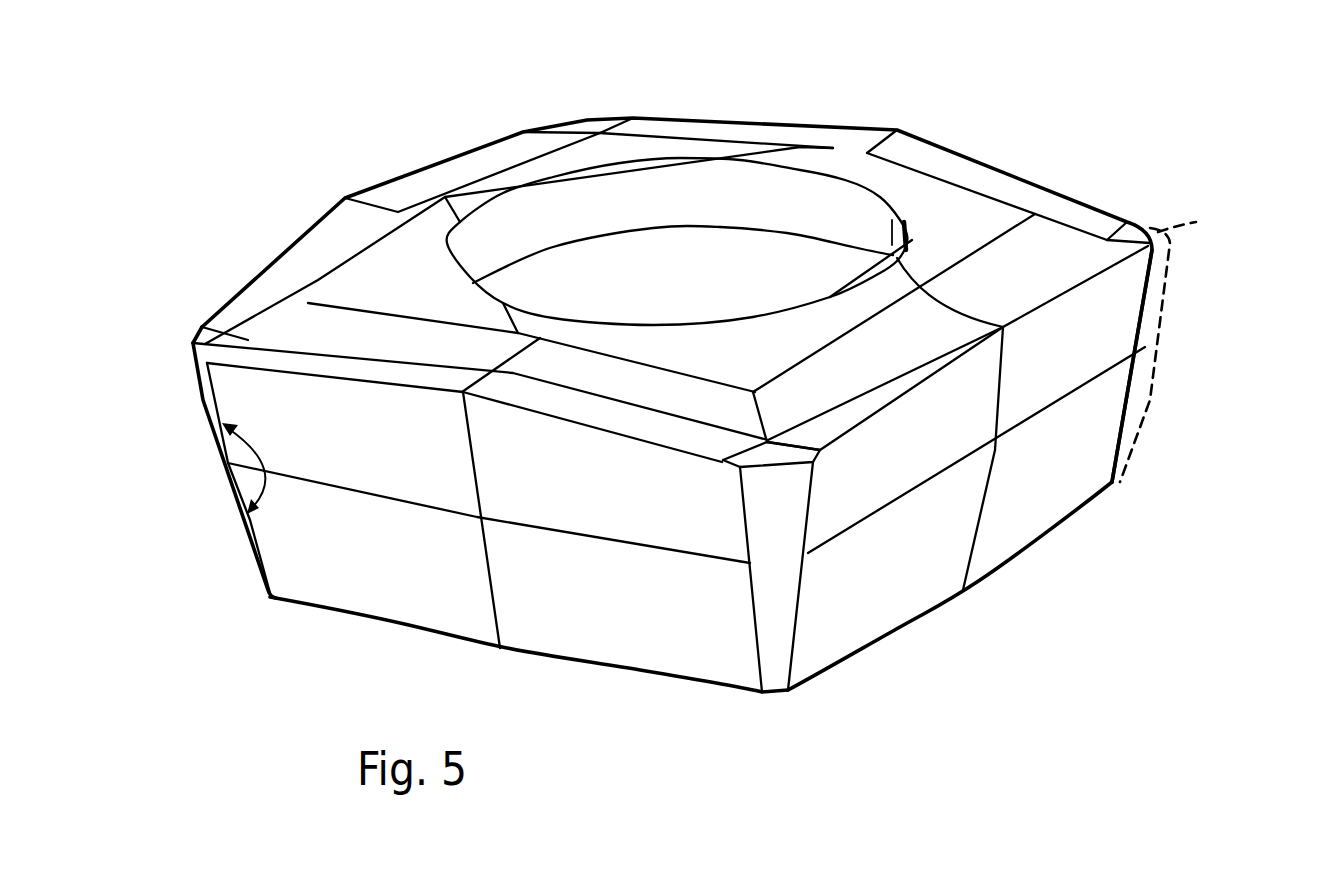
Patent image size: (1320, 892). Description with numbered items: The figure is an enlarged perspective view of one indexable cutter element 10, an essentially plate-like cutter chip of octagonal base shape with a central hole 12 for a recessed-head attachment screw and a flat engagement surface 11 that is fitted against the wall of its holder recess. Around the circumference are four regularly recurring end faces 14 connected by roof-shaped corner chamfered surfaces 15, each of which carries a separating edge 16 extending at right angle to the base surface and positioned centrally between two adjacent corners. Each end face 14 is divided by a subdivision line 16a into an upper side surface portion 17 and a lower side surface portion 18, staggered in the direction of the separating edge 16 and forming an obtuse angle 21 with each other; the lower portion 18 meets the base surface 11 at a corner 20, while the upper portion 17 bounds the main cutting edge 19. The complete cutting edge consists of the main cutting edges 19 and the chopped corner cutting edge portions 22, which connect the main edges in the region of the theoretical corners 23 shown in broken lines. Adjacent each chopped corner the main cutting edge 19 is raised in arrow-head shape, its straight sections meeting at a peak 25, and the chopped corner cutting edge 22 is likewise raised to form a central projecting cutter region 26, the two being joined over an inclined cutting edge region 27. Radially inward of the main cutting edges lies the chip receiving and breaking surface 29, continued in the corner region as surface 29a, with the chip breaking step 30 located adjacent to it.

The cutter element 10 is at (672, 331).
The flat engagement surface 11 is at (529, 680).
The central hole 12 is at (679, 163).
The end face 14 is at (1202, 366).
The corner chamfered surface 15 is at (443, 527).
The separating edge 16 is at (1009, 498).
The subdivision line 16a is at (979, 467).
The upper side surface portion 17 is at (577, 496).
The lower side surface portion 18 is at (897, 561).
The main cutting edge 19 is at (670, 262).
The corner 20 is at (950, 617).
The obtuse angle 21 is at (273, 459).
The corner cutting edge portion 22 is at (655, 277).
The theoretical corner 23 is at (1189, 335).
The peak 25 is at (994, 318).
The central projecting cutter region 26 is at (779, 463).
The inclined cutting edge region 27 is at (817, 481).
The chip receiving and chip breaking surface 29 is at (491, 520).
The chip removal and breaking surface in corner region 29a is at (885, 383).
The chip breaking step 30 is at (570, 252).